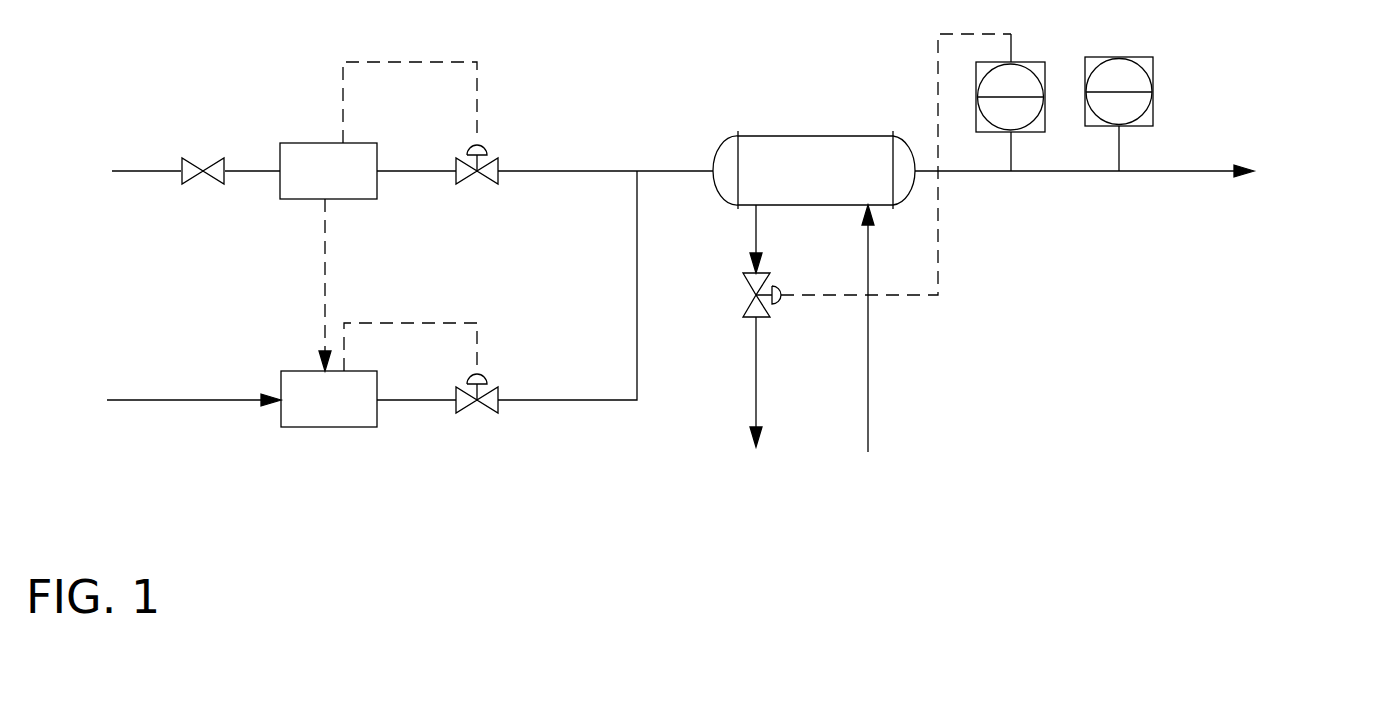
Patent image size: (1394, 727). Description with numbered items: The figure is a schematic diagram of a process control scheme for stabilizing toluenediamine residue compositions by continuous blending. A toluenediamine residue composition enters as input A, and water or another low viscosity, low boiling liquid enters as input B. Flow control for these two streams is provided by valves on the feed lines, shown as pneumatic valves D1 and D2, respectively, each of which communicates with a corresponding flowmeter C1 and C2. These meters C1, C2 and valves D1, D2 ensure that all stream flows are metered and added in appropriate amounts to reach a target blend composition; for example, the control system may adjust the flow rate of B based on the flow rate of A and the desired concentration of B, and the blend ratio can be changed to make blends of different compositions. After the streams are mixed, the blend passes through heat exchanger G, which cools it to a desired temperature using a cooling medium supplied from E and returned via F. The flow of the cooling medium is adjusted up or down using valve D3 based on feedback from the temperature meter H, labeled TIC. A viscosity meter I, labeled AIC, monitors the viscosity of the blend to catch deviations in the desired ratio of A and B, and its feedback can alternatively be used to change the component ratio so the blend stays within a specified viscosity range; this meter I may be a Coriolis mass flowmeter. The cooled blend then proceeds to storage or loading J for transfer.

The toluenediamine residue composition input A is at (153, 153).
The water or low viscosity, low boiling liquid input B is at (154, 383).
The flowmeter C1 is at (378, 216).
The flowmeter C2 is at (379, 375).
The pneumatic valve D1 is at (545, 181).
The pneumatic valve D2 is at (507, 310).
The valve D3 is at (859, 175).
The cooling medium supply E is at (869, 384).
The cooling medium return F is at (758, 440).
The heat exchanger G is at (983, 170).
The temperature meter (TIC) H is at (1010, 86).
The viscosity meter (AIC) I is at (1119, 85).
The storage or loading J is at (1313, 149).